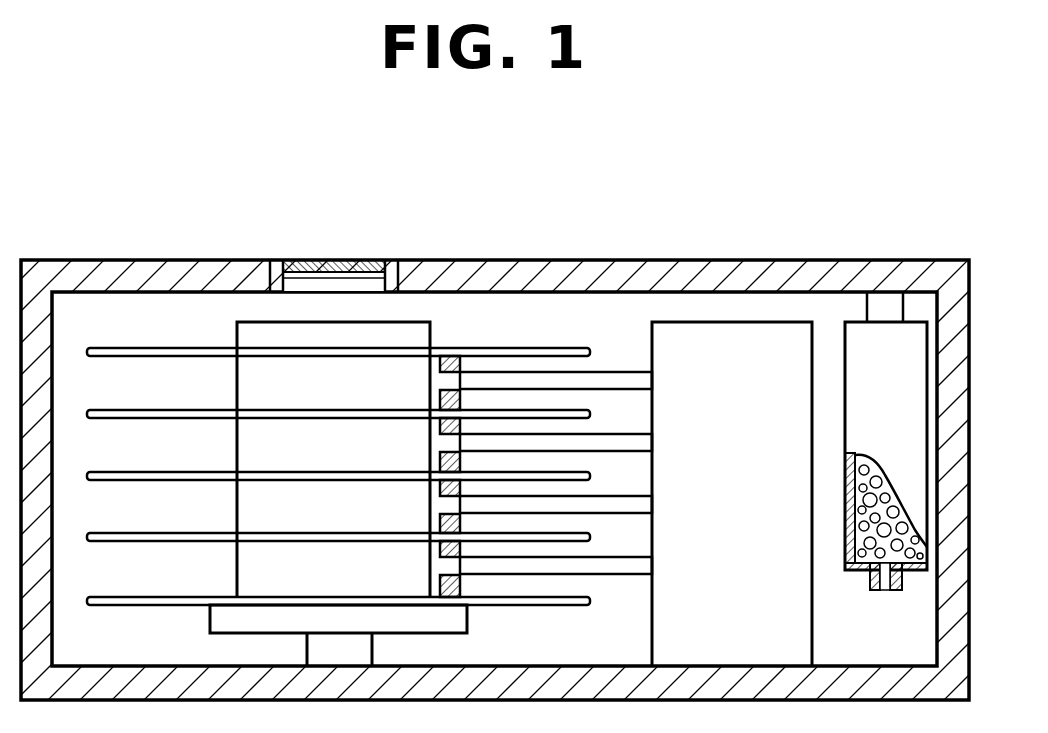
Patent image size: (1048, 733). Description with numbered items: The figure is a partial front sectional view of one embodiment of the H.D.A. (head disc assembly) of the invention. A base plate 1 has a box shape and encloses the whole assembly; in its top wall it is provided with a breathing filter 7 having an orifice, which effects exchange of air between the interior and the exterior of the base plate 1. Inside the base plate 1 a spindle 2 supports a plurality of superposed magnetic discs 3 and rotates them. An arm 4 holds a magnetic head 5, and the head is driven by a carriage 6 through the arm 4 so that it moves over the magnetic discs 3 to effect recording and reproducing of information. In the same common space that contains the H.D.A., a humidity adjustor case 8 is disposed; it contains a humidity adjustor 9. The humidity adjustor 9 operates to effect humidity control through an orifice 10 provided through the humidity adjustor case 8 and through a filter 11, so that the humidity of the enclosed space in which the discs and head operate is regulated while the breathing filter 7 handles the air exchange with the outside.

The base plate 1 is at (648, 268).
The spindle 2 is at (418, 325).
The magnetic discs 3 is at (554, 348).
The arm 4 is at (623, 575).
The magnetic head 5 is at (462, 587).
The carriage 6 is at (787, 335).
The breathing filter 7 is at (350, 268).
The humidity adjustor case 8 is at (913, 368).
The humidity adjustor 9 is at (893, 555).
The orifice 10 is at (885, 590).
The filter 11 is at (902, 573).